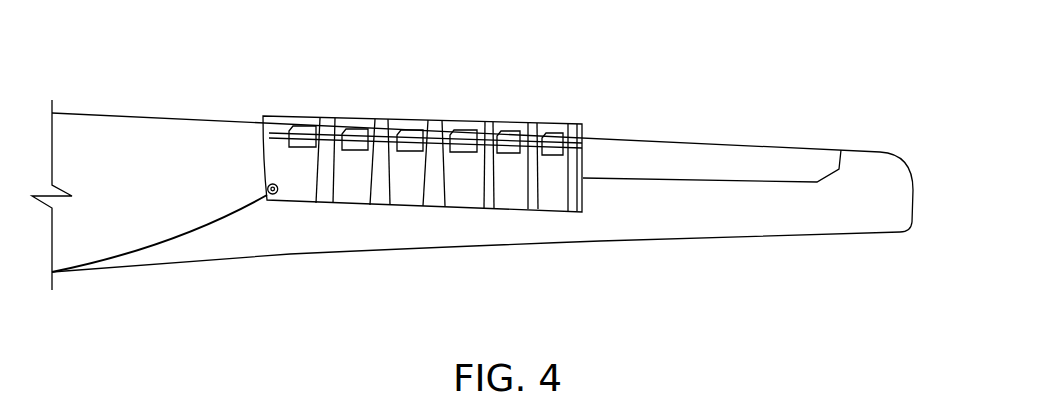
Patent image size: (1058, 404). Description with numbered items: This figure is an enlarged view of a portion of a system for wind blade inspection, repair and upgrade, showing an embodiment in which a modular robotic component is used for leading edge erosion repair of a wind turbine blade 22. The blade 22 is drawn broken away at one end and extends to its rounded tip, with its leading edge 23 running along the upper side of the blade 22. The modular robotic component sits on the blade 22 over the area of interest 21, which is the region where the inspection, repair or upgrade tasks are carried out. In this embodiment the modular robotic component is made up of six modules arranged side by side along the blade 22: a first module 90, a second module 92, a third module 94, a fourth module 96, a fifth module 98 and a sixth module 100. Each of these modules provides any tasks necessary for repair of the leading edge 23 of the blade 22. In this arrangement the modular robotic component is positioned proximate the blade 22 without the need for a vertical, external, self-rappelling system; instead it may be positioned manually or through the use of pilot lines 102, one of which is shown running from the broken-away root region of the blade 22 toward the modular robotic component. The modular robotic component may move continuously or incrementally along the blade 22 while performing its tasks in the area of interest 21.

The area of interest 21 is at (577, 125).
The blade 22 is at (687, 225).
The leading edge 23 is at (680, 142).
The first module 90 is at (557, 134).
The second module 92 is at (512, 134).
The third module 94 is at (465, 134).
The fourth module 96 is at (408, 134).
The fifth module 98 is at (353, 134).
The sixth module 100 is at (300, 134).
The pilot lines 102 is at (105, 262).